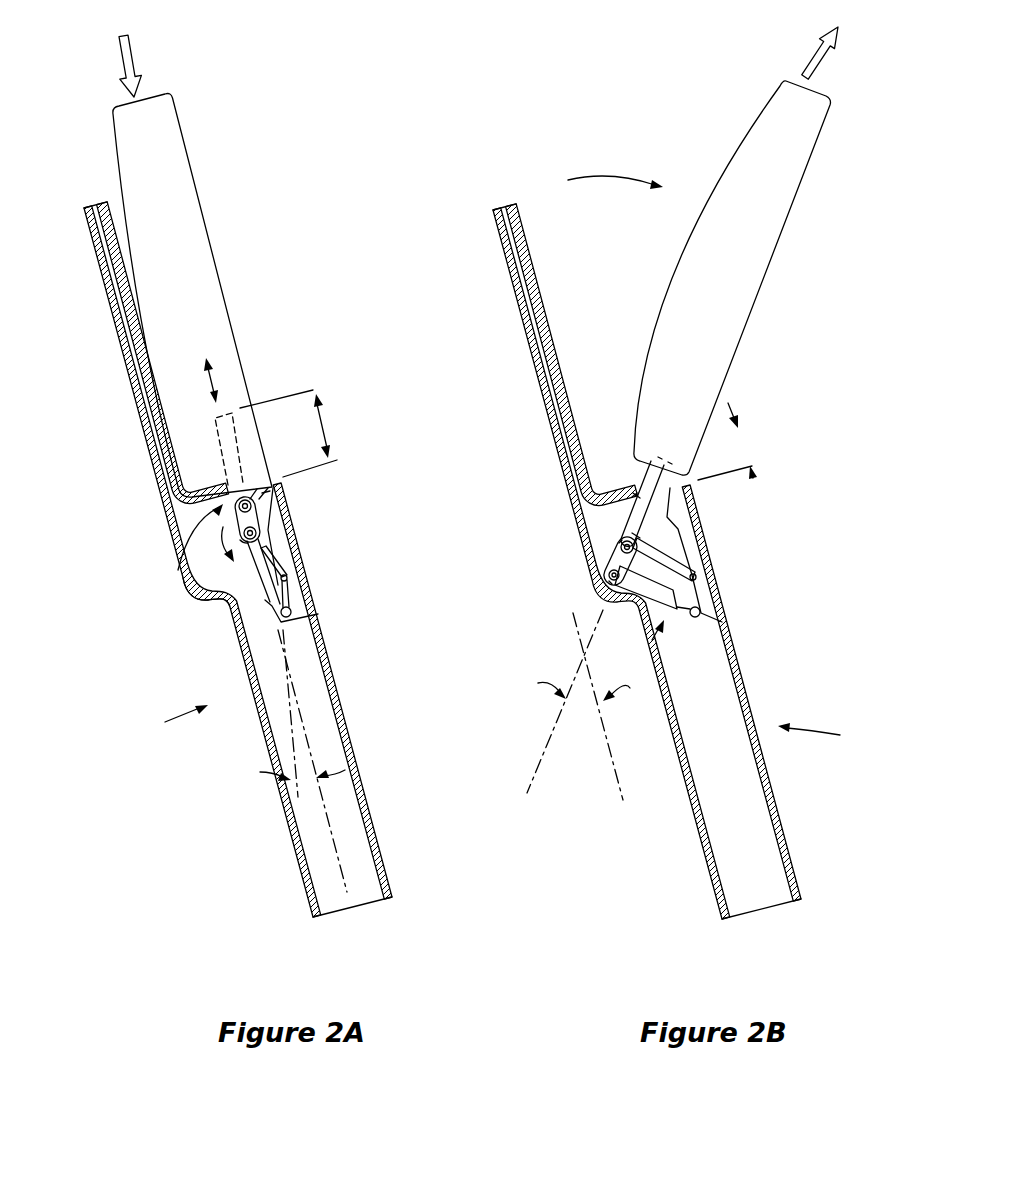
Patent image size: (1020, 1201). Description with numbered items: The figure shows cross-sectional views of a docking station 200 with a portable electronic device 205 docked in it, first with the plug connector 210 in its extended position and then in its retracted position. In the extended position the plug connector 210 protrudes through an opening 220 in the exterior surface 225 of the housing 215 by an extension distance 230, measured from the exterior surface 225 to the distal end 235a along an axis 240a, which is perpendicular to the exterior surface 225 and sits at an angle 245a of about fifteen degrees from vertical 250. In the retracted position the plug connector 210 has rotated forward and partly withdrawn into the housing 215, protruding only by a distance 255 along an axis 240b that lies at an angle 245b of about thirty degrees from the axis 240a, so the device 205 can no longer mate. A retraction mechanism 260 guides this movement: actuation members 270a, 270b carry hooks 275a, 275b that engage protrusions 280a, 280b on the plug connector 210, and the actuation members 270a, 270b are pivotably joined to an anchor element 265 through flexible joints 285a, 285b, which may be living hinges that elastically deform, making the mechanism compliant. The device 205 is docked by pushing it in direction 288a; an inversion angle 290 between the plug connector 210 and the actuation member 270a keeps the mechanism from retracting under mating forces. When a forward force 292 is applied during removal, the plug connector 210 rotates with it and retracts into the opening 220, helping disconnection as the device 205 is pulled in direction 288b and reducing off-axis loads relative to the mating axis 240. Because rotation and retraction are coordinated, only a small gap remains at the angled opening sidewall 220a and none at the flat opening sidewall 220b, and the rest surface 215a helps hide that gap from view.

In FIG. 2A, the docking station 200 is at (163, 722).
In FIG. 2B, the docking station 200 is at (831, 736).
In FIG. 2A, the portable electronic device 205 is at (218, 243).
In FIG. 2B, the portable electronic device 205 is at (803, 237).
In FIG. 2A, the plug connector 210 is at (227, 441).
In FIG. 2B, the plug connector 210 is at (632, 533).
In FIG. 2A, the housing 215 is at (385, 872).
In FIG. 2B, the housing 215 is at (795, 868).
In FIG. 2A, the rest surface 215a is at (148, 343).
In FIG. 2B, the rest surface 215a is at (553, 320).
In FIG. 2A, the opening 220 is at (180, 566).
In FIG. 2A, the angled opening sidewall 220a is at (222, 511).
In FIG. 2B, the flat opening sidewall 220b is at (695, 490).
In FIG. 2A, the exterior surface 225 is at (251, 502).
In FIG. 2B, the exterior surface 225 is at (633, 493).
In FIG. 2A, the extension distance 230 is at (329, 424).
In FIG. 2A, the distal end 235a is at (217, 413).
In FIG. 2B, the distal end 235a is at (637, 493).
In FIG. 2A, the mating axis 240 is at (220, 378).
In FIG. 2A, the axis 240a is at (310, 739).
In FIG. 2B, the axis 240a is at (610, 748).
In FIG. 2B, the axis 240b is at (547, 747).
In FIG. 2A, the angle 245a is at (306, 785).
In FIG. 2B, the angle 245b is at (570, 678).
In FIG. 2A, the vertical 250 is at (300, 649).
In FIG. 2B, the distance 255 is at (740, 447).
In FIG. 2A, the retraction mechanism 260 is at (246, 590).
In FIG. 2B, the retraction mechanism 260 is at (651, 641).
In FIG. 2A, the anchor element 265 is at (300, 612).
In FIG. 2B, the anchor element 265 is at (718, 622).
In FIG. 2A, the actuation member 270a is at (258, 618).
In FIG. 2B, the actuation member 270a is at (657, 592).
In FIG. 2A, the actuation member 270b is at (280, 558).
In FIG. 2B, the actuation member 270b is at (665, 557).
In FIG. 2A, the hook 275a is at (256, 530).
In FIG. 2B, the hook 275a is at (609, 575).
In FIG. 2A, the hook 275b is at (252, 505).
In FIG. 2B, the hook 275b is at (621, 547).
In FIG. 2A, the protrusion 280a is at (257, 534).
In FIG. 2B, the protrusion 280a is at (612, 584).
In FIG. 2A, the protrusion 280b is at (270, 489).
In FIG. 2B, the protrusion 280b is at (622, 539).
In FIG. 2A, the flexible joint 285a is at (293, 606).
In FIG. 2B, the flexible joint 285a is at (700, 612).
In FIG. 2A, the flexible joint 285b is at (290, 577).
In FIG. 2B, the flexible joint 285b is at (697, 575).
In FIG. 2A, the direction 288a is at (135, 52).
In FIG. 2B, the direction 288b is at (808, 58).
In FIG. 2A, the inversion angle 290 is at (225, 598).
In FIG. 2B, the force 292 is at (612, 172).